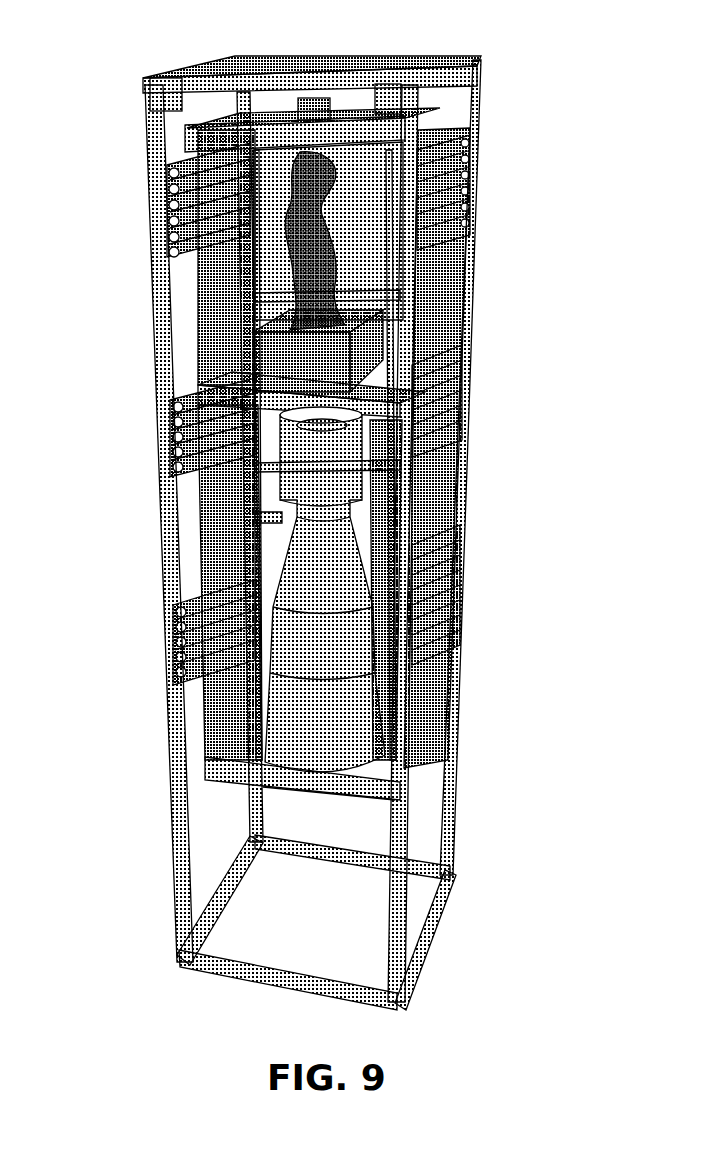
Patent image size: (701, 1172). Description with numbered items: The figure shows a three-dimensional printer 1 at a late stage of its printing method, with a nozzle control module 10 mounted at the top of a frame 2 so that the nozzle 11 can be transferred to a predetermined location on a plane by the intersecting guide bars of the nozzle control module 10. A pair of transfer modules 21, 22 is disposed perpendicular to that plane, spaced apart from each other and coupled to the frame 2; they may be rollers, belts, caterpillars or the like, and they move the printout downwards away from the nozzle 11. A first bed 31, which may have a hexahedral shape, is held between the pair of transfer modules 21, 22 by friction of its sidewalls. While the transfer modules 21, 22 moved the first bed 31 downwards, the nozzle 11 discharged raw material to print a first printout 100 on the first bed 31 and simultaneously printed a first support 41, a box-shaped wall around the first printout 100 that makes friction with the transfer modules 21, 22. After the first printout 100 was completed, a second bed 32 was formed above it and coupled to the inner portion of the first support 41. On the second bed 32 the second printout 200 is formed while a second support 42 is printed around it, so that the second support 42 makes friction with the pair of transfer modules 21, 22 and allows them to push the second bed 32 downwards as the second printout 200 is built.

The 3D printer 1 is at (312, 517).
The nozzle control module 10 is at (240, 60).
The nozzle 11 is at (343, 123).
The frame 2 is at (463, 458).
The first transfer module 21 is at (152, 206).
The second transfer module 22 is at (463, 193).
The first bed 31 is at (213, 765).
The second bed 32 is at (217, 380).
The first support 41 is at (205, 550).
The second support 42 is at (158, 288).
The first printout 100 is at (360, 594).
The second printout 200 is at (337, 260).